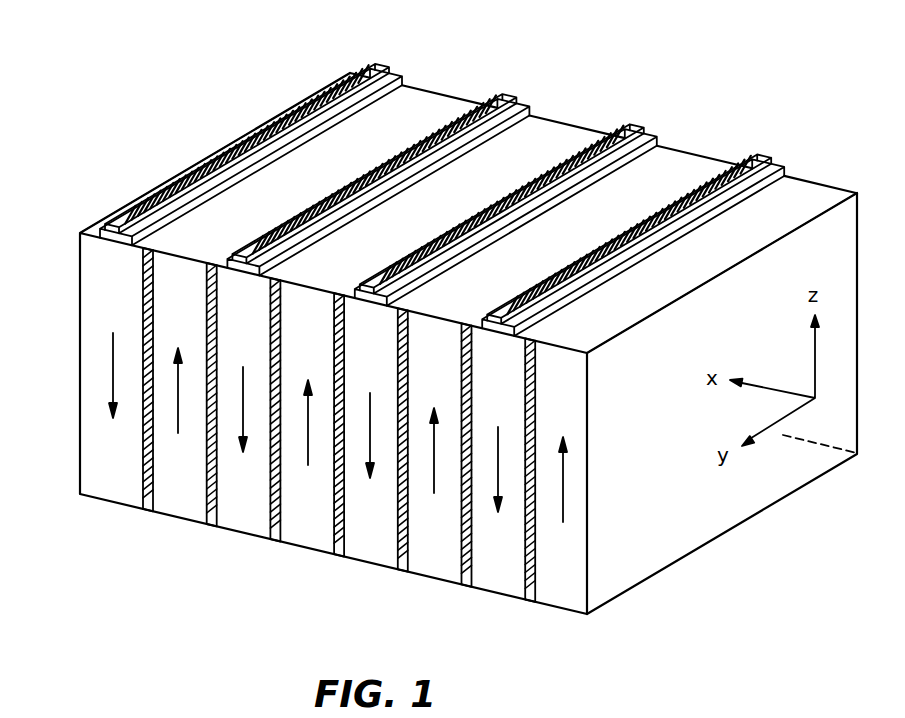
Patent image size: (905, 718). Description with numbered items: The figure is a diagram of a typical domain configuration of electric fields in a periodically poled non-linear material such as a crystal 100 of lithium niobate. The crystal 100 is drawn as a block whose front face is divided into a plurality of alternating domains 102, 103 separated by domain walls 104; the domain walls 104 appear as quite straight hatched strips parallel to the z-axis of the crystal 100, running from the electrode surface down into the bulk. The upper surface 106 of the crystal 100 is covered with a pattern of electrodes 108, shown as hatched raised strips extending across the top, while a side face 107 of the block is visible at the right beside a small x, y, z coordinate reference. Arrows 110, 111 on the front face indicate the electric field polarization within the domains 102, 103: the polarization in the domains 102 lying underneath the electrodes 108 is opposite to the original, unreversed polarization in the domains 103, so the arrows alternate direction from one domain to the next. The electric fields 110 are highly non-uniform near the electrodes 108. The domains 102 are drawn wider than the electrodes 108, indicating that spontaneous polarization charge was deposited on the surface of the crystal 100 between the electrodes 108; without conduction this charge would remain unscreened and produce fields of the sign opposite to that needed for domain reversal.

The crystal 100 is at (162, 90).
The domains 102 is at (99, 487).
The domains 103 is at (175, 497).
The domain walls 104 is at (418, 92).
The surface 106 is at (585, 102).
The side surface 107 is at (723, 535).
The electrodes 108 is at (311, 108).
The arrows 110 is at (113, 372).
The arrows 111 is at (178, 390).